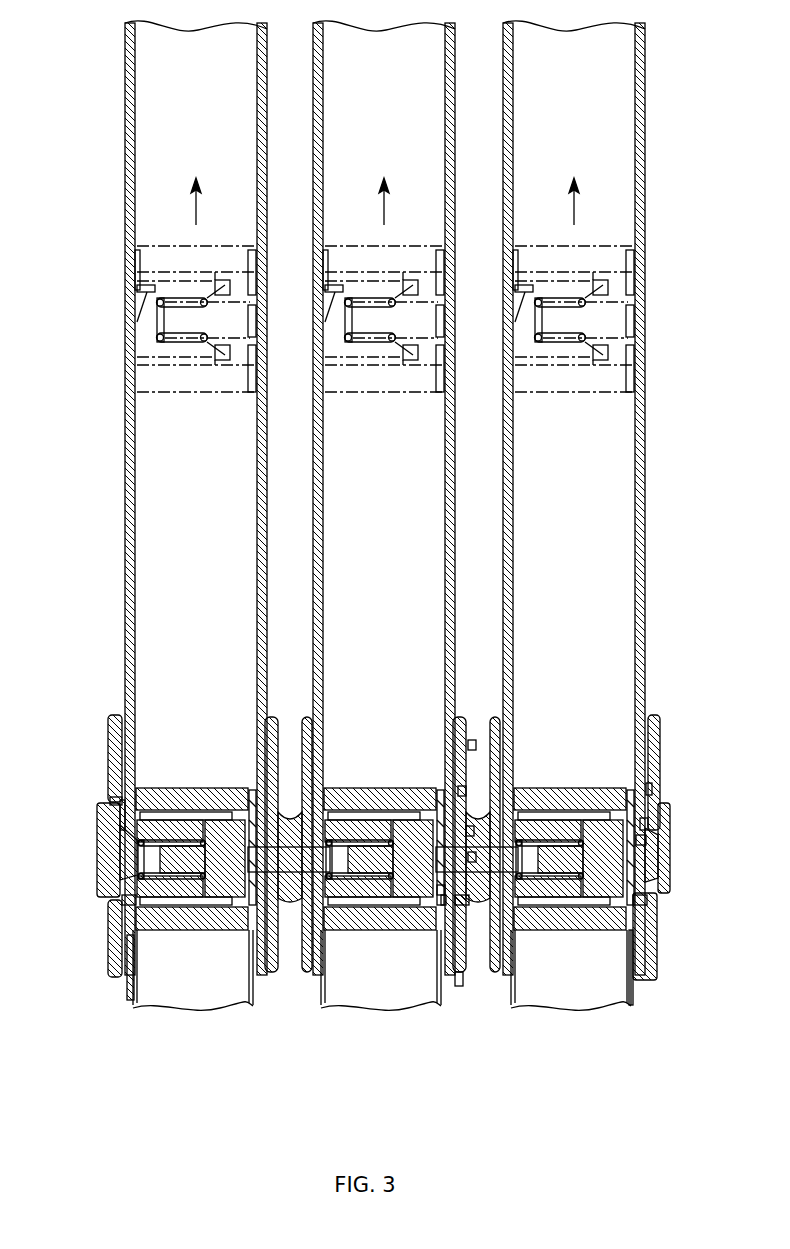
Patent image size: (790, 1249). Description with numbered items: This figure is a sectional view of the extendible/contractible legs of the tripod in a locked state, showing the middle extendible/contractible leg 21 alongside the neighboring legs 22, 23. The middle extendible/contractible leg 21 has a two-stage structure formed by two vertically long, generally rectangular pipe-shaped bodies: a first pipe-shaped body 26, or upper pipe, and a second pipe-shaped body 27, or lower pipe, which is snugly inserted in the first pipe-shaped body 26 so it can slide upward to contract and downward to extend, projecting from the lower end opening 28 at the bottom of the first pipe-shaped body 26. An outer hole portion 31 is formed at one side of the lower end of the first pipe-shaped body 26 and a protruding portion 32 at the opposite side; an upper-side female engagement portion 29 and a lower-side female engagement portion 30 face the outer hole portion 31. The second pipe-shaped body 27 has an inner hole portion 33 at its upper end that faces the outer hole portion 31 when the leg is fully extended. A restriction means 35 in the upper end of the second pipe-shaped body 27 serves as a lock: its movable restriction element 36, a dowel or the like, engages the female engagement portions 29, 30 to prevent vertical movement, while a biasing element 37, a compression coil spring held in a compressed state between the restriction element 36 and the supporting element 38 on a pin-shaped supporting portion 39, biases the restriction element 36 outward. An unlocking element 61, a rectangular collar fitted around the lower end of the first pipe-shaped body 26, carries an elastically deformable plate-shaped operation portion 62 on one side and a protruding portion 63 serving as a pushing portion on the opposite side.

The middle extendible/contractible leg 21 is at (405, 1018).
The second pipe 22 is at (588, 1018).
The third pipe 23 is at (188, 1018).
The first pipe-shaped body 26 is at (456, 562).
The second pipe-shaped body 27 is at (445, 905).
The lower end opening 28 is at (262, 972).
The upper-side female engagement portion 29 is at (118, 792).
The lower-side female engagement portion 30 is at (118, 856).
The outer hole portion 31 is at (122, 830).
The protruding portion 32 is at (250, 790).
The inner hole portion 33 is at (130, 898).
The restriction means 35 is at (170, 915).
The restriction element 36 is at (188, 890).
The biasing element 37 is at (128, 936).
The supporting element 38 is at (250, 905).
The pin-shaped supporting portion 39 is at (172, 858).
The unlocking element 61 is at (112, 980).
The operation portion 62 is at (98, 842).
The protruding portion 63 is at (288, 820).